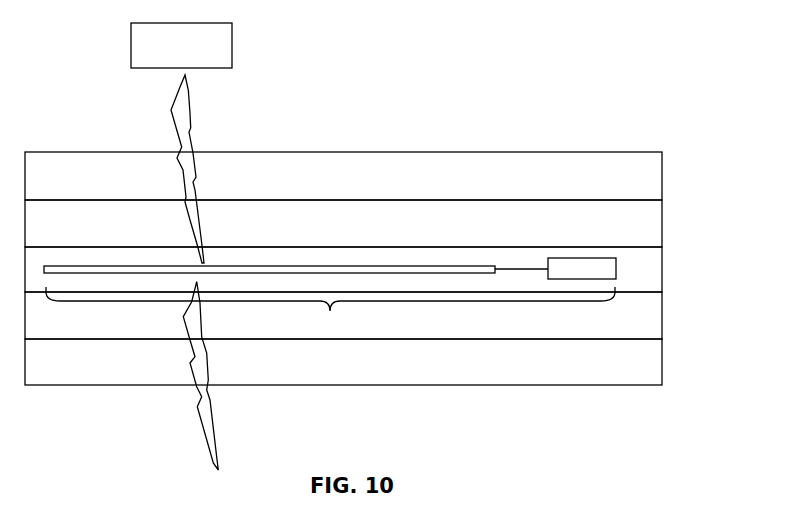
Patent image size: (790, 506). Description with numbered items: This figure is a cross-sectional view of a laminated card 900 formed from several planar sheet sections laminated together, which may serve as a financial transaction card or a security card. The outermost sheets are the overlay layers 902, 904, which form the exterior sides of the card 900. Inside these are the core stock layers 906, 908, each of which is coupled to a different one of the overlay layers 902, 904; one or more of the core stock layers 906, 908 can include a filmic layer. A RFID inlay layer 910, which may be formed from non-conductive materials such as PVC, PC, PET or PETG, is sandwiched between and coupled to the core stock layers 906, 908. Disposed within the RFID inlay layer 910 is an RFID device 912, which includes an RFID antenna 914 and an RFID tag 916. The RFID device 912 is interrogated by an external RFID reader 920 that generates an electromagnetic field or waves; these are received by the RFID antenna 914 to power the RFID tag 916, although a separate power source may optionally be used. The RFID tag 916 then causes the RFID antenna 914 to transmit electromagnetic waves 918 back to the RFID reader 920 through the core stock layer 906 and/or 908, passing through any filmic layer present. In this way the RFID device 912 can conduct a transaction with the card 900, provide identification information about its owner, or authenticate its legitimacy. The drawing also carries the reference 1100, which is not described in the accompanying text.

The laminated card 900 is at (586, 90).
The method 1100 is at (632, 505).
The overlay layer 902 is at (655, 177).
The core stock layer 906 is at (655, 224).
The RFID inlay layer 910 is at (655, 271).
The core stock layer 908 is at (655, 317).
The overlay layer 904 is at (655, 364).
The RFID device 912 is at (330, 313).
The RFID antenna 914 is at (288, 266).
The RFID tag 916 is at (617, 273).
The electromagnetic waves 918 is at (186, 108).
The RFID reader 920 is at (232, 43).